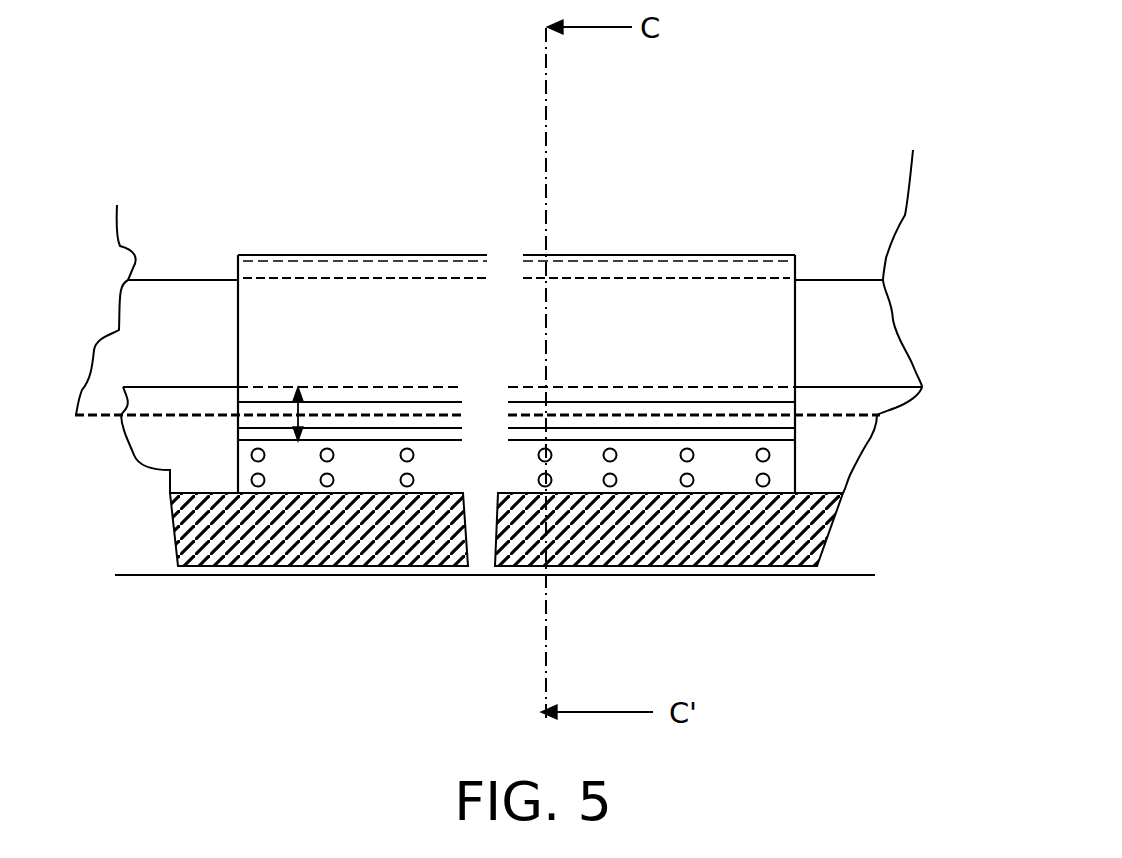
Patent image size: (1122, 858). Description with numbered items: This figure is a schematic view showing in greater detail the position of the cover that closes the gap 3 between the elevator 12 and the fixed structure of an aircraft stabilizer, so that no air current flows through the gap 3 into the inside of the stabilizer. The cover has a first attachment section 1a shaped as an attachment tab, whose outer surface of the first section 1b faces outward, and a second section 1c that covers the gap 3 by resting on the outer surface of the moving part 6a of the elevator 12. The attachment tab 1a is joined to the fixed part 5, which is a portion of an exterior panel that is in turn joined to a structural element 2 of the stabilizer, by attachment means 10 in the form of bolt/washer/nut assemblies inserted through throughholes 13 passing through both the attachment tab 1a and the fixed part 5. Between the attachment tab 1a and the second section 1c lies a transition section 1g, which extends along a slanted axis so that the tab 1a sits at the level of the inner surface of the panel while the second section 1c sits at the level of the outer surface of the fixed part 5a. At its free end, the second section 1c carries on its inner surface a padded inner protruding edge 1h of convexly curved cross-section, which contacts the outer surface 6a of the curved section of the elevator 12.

The first attachment section 1a is at (808, 475).
The outer surface of the first section 1b is at (447, 468).
The second section 1c is at (237, 330).
The transition section 1g is at (386, 404).
The inner protruding edge 1h is at (285, 265).
The structural element of the vehicle 2 is at (506, 529).
The gap 3 is at (299, 387).
The fixed part 5 is at (870, 468).
The outer surface of the fixed part of the vehicle 5a is at (198, 400).
The outer surface of the moving part 6a is at (629, 213).
The attachment means for attaching the first section to the structural element 10 is at (407, 486).
The elevator 12 is at (161, 360).
The throughhole in the attachment section 13 is at (518, 455).